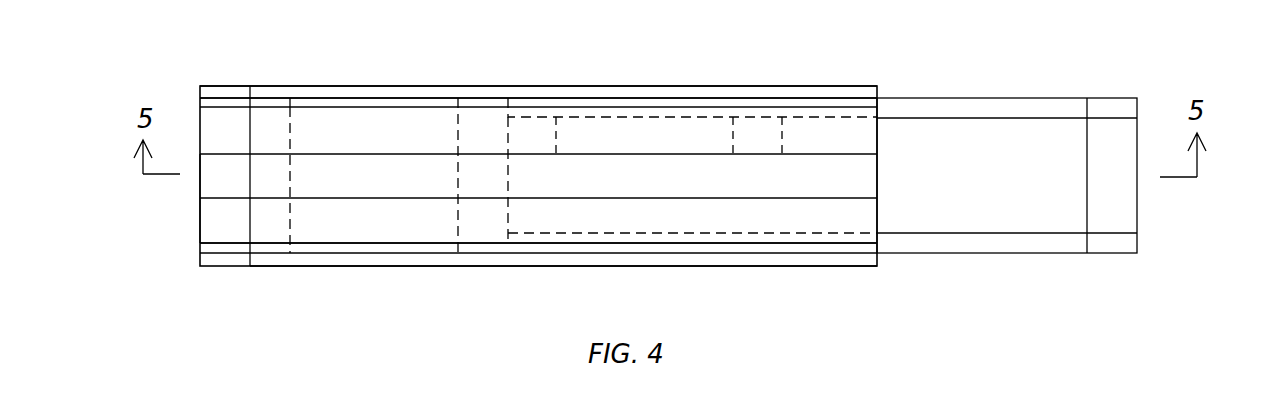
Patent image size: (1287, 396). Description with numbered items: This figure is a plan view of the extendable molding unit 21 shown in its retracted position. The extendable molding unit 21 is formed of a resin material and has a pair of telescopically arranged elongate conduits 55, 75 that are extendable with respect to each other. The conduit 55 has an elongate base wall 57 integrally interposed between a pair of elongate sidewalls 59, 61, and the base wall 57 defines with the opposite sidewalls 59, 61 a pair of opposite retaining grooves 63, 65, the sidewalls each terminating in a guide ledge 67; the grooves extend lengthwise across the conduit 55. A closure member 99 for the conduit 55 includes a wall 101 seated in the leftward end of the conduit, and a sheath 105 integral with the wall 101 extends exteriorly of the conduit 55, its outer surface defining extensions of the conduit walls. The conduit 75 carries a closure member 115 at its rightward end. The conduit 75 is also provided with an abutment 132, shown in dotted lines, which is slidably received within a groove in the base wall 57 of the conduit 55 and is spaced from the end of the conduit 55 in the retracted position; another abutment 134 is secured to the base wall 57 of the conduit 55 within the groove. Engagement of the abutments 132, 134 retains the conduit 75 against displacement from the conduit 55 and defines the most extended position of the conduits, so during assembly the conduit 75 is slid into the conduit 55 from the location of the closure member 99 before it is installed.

The extendable molding unit 21 is at (1122, 61).
The elongate conduit 55 is at (410, 85).
The base wall 57 is at (308, 118).
The sidewall 59 is at (528, 86).
The sidewall 61 is at (520, 268).
The retaining groove 63 is at (213, 247).
The retaining groove 65 is at (213, 103).
The guide ledge 67 is at (213, 183).
The conduit 75 is at (1035, 96).
The closure member 99 is at (229, 85).
The wall 101 is at (290, 222).
The sheath 105 is at (205, 218).
The closure member 115 is at (1110, 256).
The abutment 132 is at (540, 135).
The abutment 134 is at (752, 135).